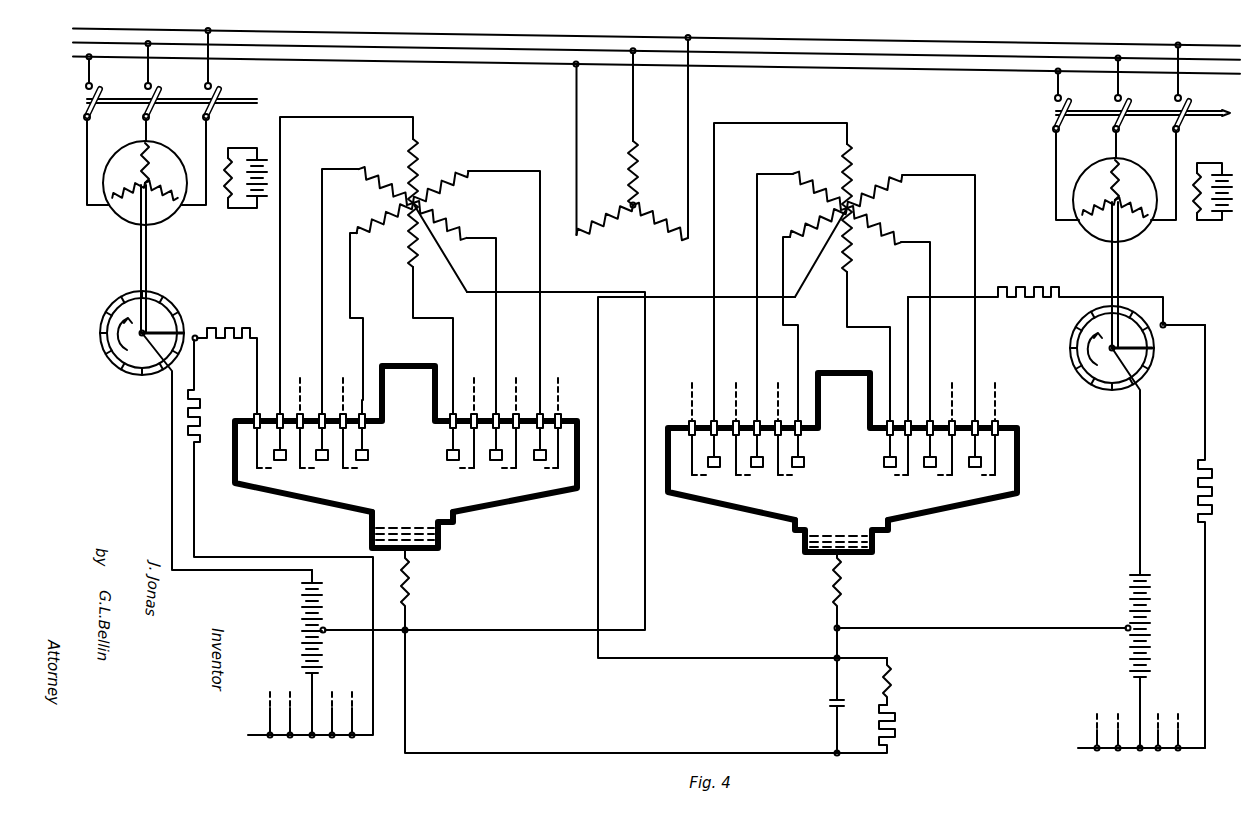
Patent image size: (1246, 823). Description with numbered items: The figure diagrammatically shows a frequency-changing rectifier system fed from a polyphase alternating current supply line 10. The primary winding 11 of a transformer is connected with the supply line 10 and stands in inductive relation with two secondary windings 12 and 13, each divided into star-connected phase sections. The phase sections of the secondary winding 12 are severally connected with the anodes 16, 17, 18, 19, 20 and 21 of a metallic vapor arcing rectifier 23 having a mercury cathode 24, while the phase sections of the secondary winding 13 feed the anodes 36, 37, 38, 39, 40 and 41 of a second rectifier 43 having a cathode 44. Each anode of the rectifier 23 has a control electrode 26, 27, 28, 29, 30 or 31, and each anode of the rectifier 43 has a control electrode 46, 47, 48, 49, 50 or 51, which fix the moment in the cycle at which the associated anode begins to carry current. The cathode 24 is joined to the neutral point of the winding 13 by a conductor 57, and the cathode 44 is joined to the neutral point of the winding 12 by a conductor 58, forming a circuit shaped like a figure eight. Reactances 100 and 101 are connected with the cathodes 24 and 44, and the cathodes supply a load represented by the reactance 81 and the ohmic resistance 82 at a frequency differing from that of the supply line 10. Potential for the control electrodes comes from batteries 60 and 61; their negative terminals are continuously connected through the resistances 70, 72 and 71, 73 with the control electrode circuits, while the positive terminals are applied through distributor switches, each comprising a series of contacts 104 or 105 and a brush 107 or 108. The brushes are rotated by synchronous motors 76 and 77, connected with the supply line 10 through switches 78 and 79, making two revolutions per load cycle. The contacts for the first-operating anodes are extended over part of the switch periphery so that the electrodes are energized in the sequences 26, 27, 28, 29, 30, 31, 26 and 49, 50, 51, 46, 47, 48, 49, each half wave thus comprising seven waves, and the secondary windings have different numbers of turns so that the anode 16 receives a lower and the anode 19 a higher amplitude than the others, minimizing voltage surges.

The polyphase alternating current supply line 10 is at (951, 63).
The primary winding 11 is at (614, 260).
The secondary winding 12 is at (366, 266).
The secondary winding 13 is at (869, 275).
The anode 16 is at (289, 462).
The anode 17 is at (328, 462).
The anode 18 is at (369, 460).
The anode 19 is at (446, 457).
The anode 20 is at (490, 462).
The anode 21 is at (534, 463).
The electric current rectifier 23 is at (397, 405).
The cathode 24 is at (446, 543).
The control electrode 26 is at (262, 468).
The control electrode 27 is at (307, 432).
The control electrode 28 is at (355, 433).
The control electrode 29 is at (455, 435).
The control electrode 30 is at (501, 438).
The control electrode 31 is at (550, 435).
The anode 36 is at (722, 469).
The anode 37 is at (763, 469).
The anode 38 is at (806, 467).
The anode 39 is at (883, 467).
The anode 40 is at (924, 469).
The anode 41 is at (967, 469).
The electric current rectifier 43 is at (830, 421).
The cathode 44 is at (880, 552).
The control electrode 46 is at (695, 439).
The control electrode 47 is at (743, 443).
The control electrode 48 is at (795, 443).
The control electrode 49 is at (888, 400).
The control electrode 50 is at (937, 444).
The control electrode 51 is at (983, 443).
The conductor 57 is at (650, 580).
The conductor 58 is at (596, 580).
The battery 60 is at (300, 630).
The battery 61 is at (1151, 627).
The resistance 70 is at (203, 414).
The resistance 71 is at (1196, 490).
The resistance 72 is at (229, 330).
The resistance 73 is at (1018, 306).
The synchronous motor 76 is at (185, 237).
The synchronous motor 77 is at (1152, 249).
The switch 78 is at (252, 100).
The switch 79 is at (1141, 131).
The reactance 81 is at (896, 679).
The ohmic resistance 82 is at (898, 724).
The reactance 100 is at (417, 585).
The reactance 101 is at (848, 587).
The series of contacts 104 is at (170, 310).
The series of contacts 105 is at (1132, 330).
The brush 107 is at (163, 332).
The brush 108 is at (1130, 346).